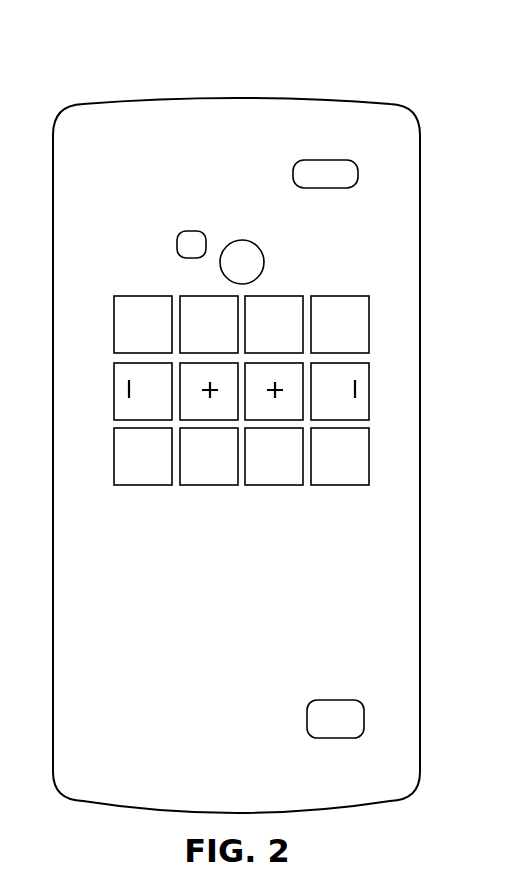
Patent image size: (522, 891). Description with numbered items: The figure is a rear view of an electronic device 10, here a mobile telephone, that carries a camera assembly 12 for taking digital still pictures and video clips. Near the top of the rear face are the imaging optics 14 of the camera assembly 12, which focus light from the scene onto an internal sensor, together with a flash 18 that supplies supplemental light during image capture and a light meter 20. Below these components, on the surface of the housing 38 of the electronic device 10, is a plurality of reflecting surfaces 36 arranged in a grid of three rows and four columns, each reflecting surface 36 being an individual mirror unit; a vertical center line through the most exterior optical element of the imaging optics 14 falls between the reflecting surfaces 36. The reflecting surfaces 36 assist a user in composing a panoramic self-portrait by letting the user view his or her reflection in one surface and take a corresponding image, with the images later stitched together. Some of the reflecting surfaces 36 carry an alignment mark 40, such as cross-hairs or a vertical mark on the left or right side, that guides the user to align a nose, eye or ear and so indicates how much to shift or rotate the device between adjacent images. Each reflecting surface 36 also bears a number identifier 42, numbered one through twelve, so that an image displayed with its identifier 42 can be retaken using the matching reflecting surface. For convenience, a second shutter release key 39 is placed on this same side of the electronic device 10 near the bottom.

The electronic device 10 is at (176, 74).
The camera assembly 12 is at (185, 209).
The imaging optics 14 is at (240, 253).
The flash 18 is at (303, 175).
The light meter 20 is at (188, 244).
The reflecting surfaces 36 is at (349, 315).
The housing 38 is at (92, 765).
The second shutter release key 39 is at (325, 718).
The alignment mark 40 is at (205, 390).
The identifier 42 is at (187, 312).